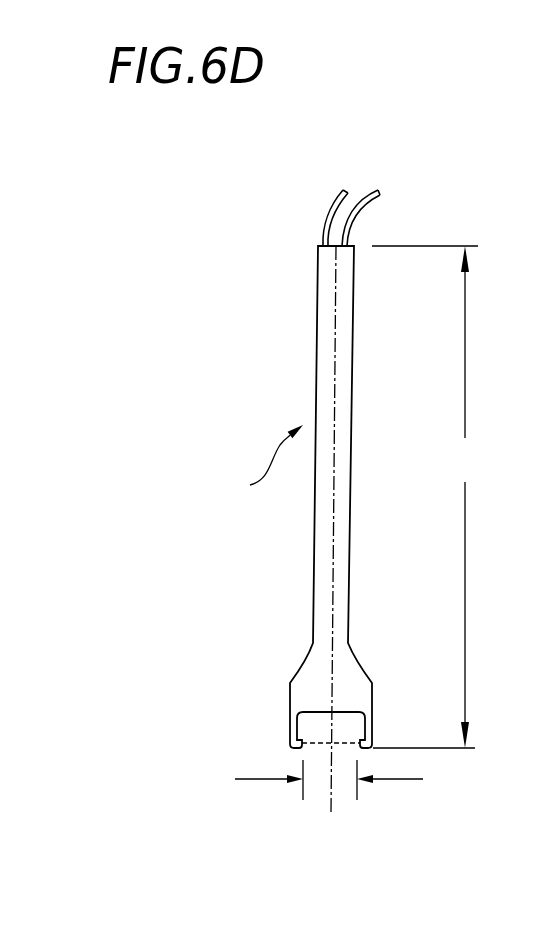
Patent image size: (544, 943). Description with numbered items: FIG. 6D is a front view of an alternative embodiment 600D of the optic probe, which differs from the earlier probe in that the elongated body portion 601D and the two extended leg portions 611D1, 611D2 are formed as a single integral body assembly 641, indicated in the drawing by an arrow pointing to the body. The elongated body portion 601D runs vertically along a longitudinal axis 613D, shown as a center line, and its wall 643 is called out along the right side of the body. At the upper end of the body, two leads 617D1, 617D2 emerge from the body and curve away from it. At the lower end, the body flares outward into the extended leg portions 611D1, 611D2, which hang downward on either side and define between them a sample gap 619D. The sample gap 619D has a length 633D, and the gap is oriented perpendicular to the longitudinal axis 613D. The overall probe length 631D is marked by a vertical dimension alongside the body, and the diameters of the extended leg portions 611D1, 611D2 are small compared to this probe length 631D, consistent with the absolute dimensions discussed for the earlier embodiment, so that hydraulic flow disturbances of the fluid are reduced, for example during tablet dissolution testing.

The embodiment of the optic probe 600D is at (299, 497).
The elongated body portion 601D is at (410, 418).
The body wall 643 is at (352, 367).
The longitudinal axis 613D is at (337, 330).
The first lead wire 617D1 is at (330, 212).
The second lead wire 617D2 is at (372, 192).
The integral body assembly 641 is at (250, 485).
The probe length 631D is at (435, 497).
The extended leg portion 611D1 is at (290, 710).
The extended leg portion 611D2 is at (372, 695).
The sample gap 619D is at (298, 735).
The length of sample gap 633D is at (337, 780).